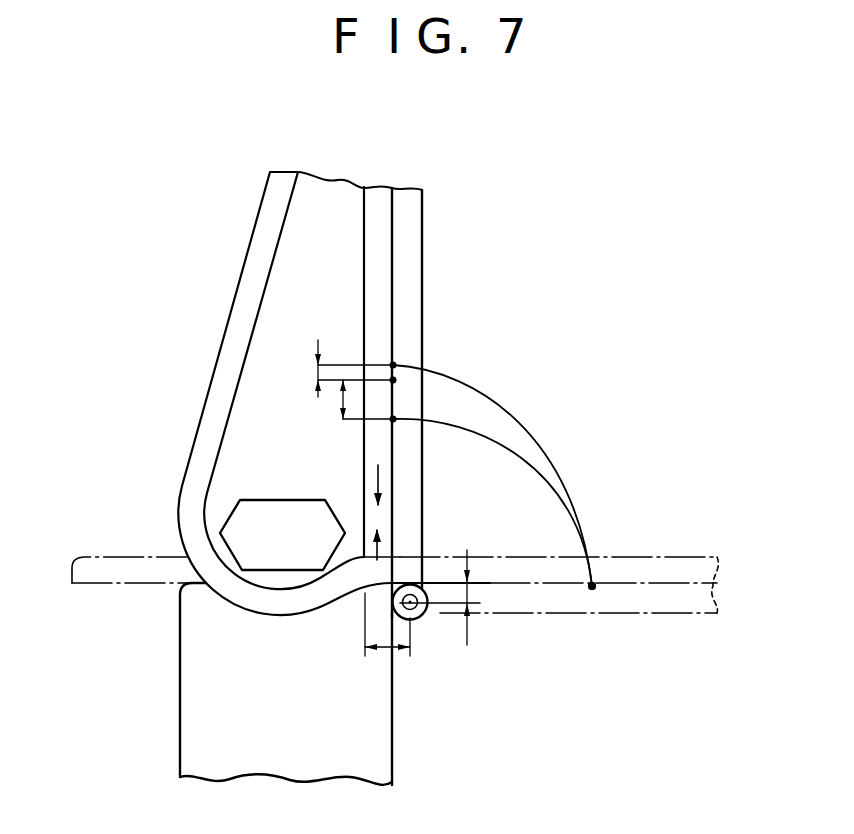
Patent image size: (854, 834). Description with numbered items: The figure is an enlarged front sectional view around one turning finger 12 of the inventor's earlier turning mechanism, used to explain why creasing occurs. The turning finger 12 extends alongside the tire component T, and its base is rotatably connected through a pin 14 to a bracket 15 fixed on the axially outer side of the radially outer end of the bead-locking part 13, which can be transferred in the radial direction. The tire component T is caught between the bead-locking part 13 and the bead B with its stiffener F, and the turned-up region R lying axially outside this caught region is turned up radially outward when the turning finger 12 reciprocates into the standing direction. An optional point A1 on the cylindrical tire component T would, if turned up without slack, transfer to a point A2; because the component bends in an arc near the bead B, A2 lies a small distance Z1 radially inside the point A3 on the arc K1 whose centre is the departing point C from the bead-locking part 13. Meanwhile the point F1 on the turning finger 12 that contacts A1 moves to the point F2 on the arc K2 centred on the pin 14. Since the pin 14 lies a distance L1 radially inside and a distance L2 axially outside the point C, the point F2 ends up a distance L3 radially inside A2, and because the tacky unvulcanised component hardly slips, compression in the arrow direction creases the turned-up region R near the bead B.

The turning finger 12 is at (412, 223).
The bead-locking part 13 is at (403, 750).
The pin 14 is at (421, 583).
The bracket 15 is at (390, 616).
The tire component T is at (252, 275).
The turned-up region R is at (379, 205).
The stiffener F is at (319, 215).
The bead B is at (293, 520).
The departing point C is at (365, 584).
The arc K1 is at (515, 415).
The arc K2 is at (507, 448).
The point on the tire component A1 is at (594, 582).
The point on the turning finger F1 is at (592, 586).
The point A2 is at (393, 380).
The point on the arc A3 is at (393, 365).
The point on the arc F2 is at (393, 419).
The distance Z1 is at (299, 368).
The distance L1 is at (463, 596).
The distance L2 is at (382, 650).
The distance L3 is at (339, 400).